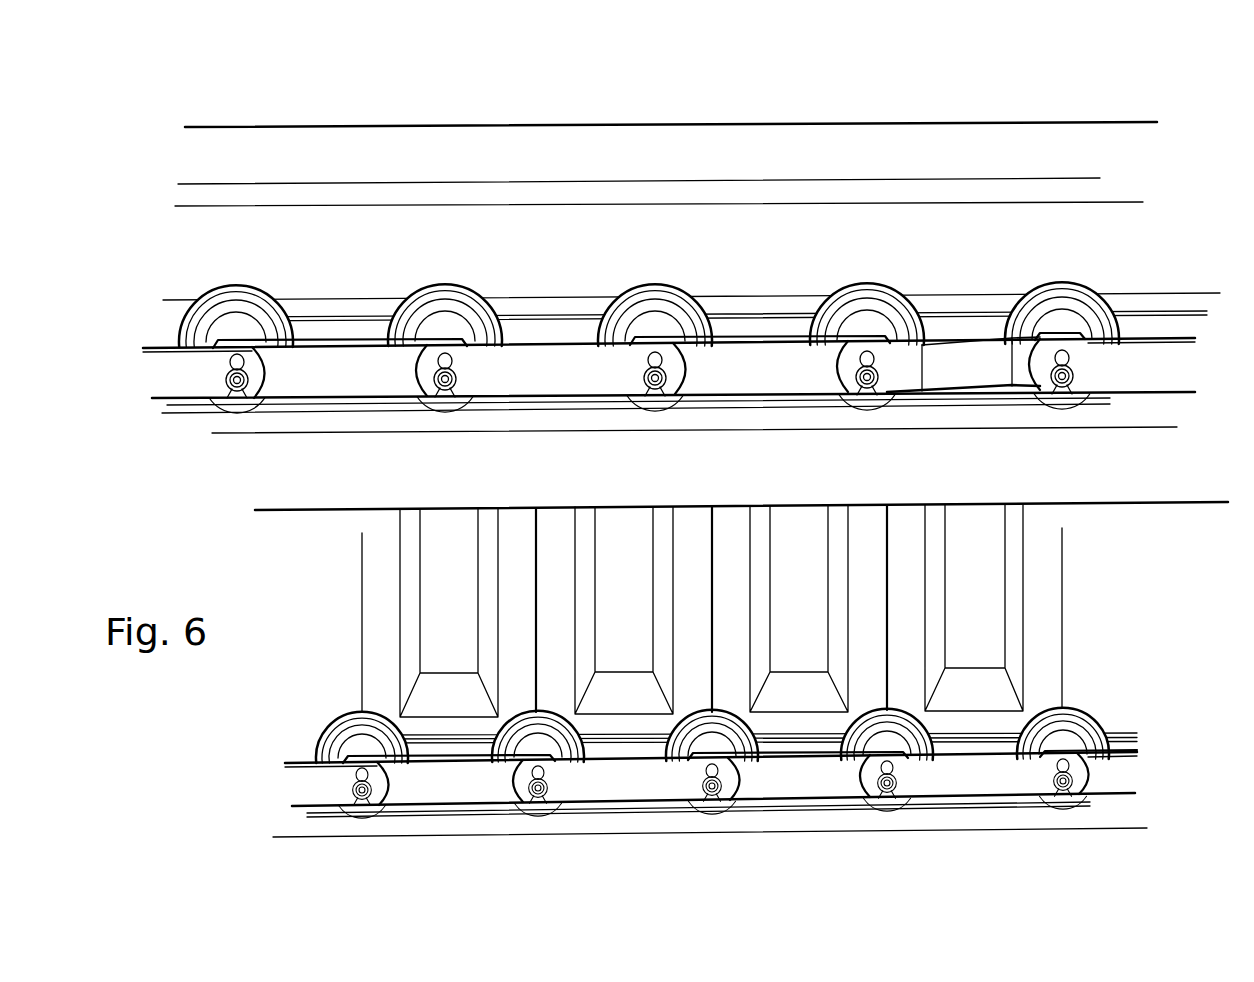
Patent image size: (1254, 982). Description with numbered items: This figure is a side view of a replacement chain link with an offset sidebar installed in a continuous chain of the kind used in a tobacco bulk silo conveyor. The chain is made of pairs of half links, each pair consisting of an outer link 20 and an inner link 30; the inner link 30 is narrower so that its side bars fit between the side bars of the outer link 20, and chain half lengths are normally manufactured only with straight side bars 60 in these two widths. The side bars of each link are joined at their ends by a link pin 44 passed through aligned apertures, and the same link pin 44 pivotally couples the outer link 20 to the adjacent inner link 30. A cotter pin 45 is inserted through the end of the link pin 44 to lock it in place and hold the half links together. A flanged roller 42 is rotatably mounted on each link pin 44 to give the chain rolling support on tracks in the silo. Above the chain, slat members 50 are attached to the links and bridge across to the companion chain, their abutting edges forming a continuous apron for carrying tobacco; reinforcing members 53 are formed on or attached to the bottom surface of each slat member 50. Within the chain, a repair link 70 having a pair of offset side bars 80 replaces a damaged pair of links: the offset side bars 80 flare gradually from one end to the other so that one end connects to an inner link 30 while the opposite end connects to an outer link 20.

The outer link 20 is at (572, 355).
The inner link 30 is at (782, 353).
The roller 42 is at (450, 305).
The link pin 44 is at (237, 385).
The cotter pin 45 is at (410, 357).
The slat member 50 is at (380, 645).
The reinforcing member 53 is at (440, 548).
The straight side bar 60 is at (557, 382).
The repair link 70 is at (972, 280).
The offset side bar 80 is at (968, 376).